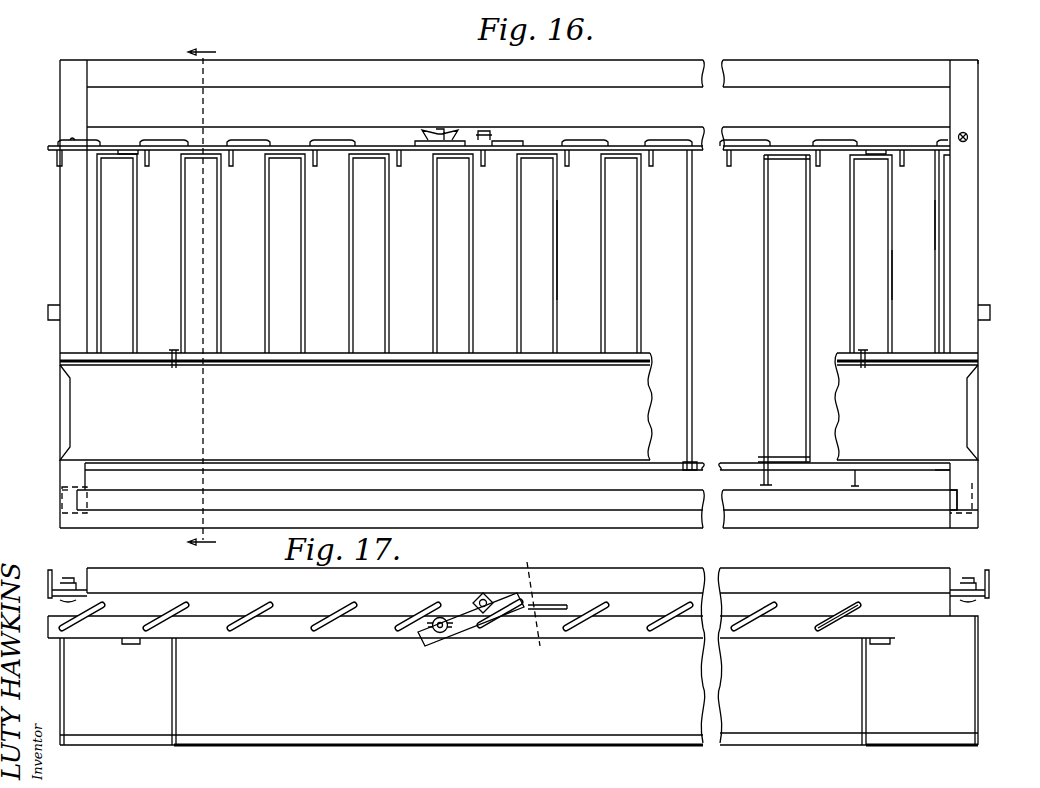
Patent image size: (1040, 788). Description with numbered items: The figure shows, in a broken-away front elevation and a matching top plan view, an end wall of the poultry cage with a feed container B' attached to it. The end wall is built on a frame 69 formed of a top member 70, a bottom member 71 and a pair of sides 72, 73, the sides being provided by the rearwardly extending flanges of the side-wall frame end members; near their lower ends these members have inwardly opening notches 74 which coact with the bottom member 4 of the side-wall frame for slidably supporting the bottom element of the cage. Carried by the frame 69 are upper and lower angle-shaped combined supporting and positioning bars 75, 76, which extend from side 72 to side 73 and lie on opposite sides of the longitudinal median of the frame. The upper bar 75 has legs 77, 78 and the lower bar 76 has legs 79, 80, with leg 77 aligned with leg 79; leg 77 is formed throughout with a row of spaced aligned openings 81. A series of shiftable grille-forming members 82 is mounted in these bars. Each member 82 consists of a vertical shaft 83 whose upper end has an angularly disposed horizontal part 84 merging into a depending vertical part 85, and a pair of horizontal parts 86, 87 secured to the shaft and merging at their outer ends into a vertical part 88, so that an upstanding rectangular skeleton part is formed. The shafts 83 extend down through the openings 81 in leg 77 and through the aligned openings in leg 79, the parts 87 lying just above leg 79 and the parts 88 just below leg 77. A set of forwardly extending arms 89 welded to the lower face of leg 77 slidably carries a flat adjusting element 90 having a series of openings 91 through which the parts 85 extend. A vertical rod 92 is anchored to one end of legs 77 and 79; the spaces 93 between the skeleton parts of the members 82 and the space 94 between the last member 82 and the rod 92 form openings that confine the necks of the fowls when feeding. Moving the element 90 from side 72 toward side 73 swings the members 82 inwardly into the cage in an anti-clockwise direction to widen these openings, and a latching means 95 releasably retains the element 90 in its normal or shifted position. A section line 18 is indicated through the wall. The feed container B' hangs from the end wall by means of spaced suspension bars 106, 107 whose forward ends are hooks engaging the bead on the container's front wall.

In FIG. 16, the bottom member 4 is at (60, 492).
In FIG. 16, the section line 18 is at (202, 295).
In FIG. 16, the frame 69 is at (888, 57).
In FIG. 16, the top member 70 is at (766, 70).
In FIG. 16, the bottom member 71 is at (824, 520).
In FIG. 16, the frame side 72 is at (60, 250).
In FIG. 16, the frame side 73 is at (972, 256).
In FIG. 16, the notch 74 is at (72, 505).
In FIG. 16, the upper combined supporting and positioning bar 75 is at (941, 135).
In FIG. 16, the lower combined supporting and positioning bar 76 is at (935, 486).
In FIG. 16, the leg 77 is at (922, 150).
In FIG. 16, the leg 78 is at (888, 127).
In FIG. 16, the leg 79 is at (880, 474).
In FIG. 16, the leg 80 is at (790, 480).
In FIG. 17, the openings 81 is at (608, 596).
In FIG. 16, the shiftable grille-forming member 82 is at (476, 292).
In FIG. 16, the vertical shaft 83 is at (764, 322).
In FIG. 16, the horizontal part 84 is at (660, 142).
In FIG. 17, the horizontal part 84 is at (664, 622).
In FIG. 16, the depending vertical part 85 is at (652, 160).
In FIG. 16, the horizontal part 86 is at (776, 162).
In FIG. 16, the horizontal part 87 is at (776, 460).
In FIG. 16, the vertical part 88 is at (808, 300).
In FIG. 16, the arm 89 is at (128, 152).
In FIG. 17, the arm 89 is at (134, 644).
In FIG. 17, the adjusting element 90 is at (631, 635).
In FIG. 17, the openings 91 is at (813, 622).
In FIG. 16, the vertical rod 92 is at (940, 200).
In FIG. 16, the spaces 93 is at (574, 252).
In FIG. 16, the space 94 is at (909, 268).
In FIG. 16, the latching means 95 is at (455, 140).
In FIG. 17, the latching means 95 is at (461, 610).
In FIG. 17, the suspension bar 106 is at (180, 692).
In FIG. 17, the suspension bar 107 is at (866, 696).
In FIG. 16, the feed container B' is at (498, 405).
In FIG. 17, the feed container B' is at (381, 691).